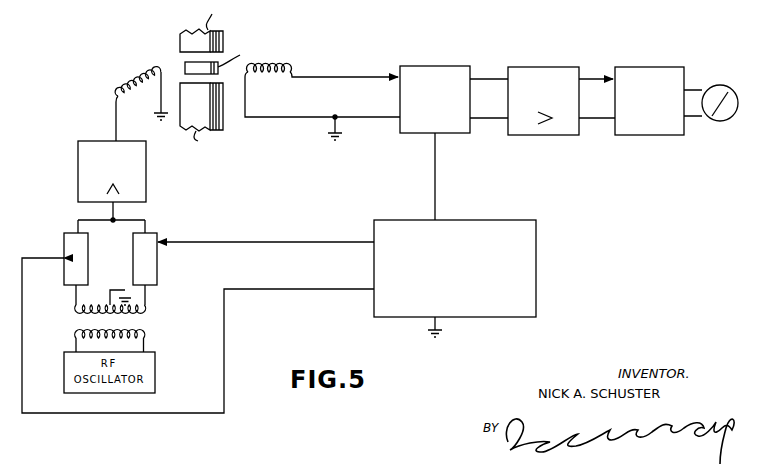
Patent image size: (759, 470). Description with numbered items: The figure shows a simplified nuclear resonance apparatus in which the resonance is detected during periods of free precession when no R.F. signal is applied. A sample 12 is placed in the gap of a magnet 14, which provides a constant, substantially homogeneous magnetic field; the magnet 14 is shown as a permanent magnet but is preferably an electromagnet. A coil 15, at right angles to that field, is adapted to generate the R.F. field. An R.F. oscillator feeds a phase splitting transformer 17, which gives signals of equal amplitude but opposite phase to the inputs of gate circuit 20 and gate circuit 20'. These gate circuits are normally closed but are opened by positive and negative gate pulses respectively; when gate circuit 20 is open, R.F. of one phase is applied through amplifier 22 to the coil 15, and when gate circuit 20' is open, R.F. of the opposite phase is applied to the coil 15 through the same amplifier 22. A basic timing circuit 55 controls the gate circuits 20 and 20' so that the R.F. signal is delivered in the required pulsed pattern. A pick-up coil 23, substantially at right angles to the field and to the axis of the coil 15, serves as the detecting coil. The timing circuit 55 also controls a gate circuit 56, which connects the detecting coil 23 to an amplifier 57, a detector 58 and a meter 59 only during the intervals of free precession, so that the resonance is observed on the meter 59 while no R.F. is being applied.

The sample 12 is at (185, 65).
The magnet 14 is at (223, 50).
The coil 15 is at (130, 86).
The phase splitting transformer 17 is at (82, 326).
The gate circuit 20 is at (57, 259).
The gate circuit 20' is at (166, 259).
The amplifier 22 is at (146, 160).
The pick-up coil 23 is at (268, 62).
The timing circuit 55 is at (536, 250).
The gate circuit 56 is at (415, 66).
The amplifier 57 is at (515, 66).
The detector 58 is at (632, 66).
The meter 59 is at (730, 86).